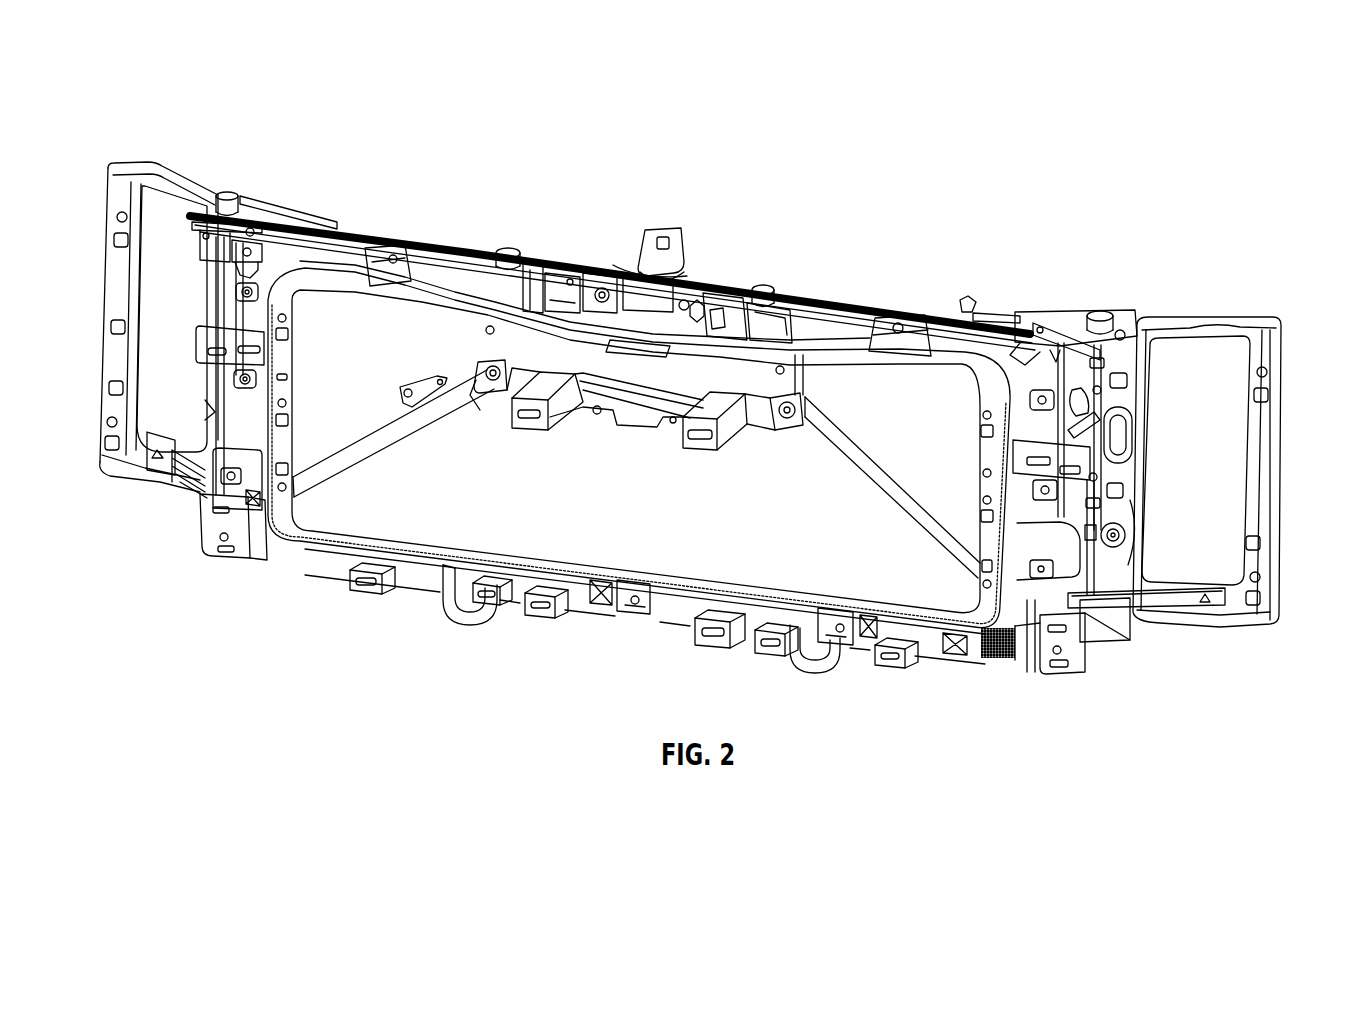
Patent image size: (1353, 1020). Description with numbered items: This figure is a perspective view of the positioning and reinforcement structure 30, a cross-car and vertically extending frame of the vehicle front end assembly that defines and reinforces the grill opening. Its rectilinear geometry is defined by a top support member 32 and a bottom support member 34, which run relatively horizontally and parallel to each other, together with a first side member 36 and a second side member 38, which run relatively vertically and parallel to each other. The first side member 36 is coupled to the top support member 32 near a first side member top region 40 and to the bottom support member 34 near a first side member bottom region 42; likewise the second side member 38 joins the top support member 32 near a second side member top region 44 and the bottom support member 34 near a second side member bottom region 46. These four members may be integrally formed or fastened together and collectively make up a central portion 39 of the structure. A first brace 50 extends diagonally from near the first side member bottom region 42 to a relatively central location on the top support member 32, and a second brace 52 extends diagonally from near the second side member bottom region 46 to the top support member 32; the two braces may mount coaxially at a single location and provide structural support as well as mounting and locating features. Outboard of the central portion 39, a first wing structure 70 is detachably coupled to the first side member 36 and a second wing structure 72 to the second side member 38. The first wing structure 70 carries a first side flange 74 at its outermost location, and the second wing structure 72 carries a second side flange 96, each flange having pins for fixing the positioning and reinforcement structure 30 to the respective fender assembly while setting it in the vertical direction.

The positioning and reinforcement structure 30 is at (1108, 170).
The top support member 32 is at (447, 245).
The bottom support member 34 is at (660, 613).
The first side member 36 is at (219, 386).
The second side member 38 is at (1128, 538).
The central portion 39 is at (848, 300).
The first side member top region 40 is at (259, 198).
The first side member bottom region 42 is at (207, 525).
The second side member top region 44 is at (1036, 314).
The second side member bottom region 46 is at (1093, 650).
The first brace 50 is at (383, 431).
The second brace 52 is at (881, 461).
The first wing structure 70 is at (161, 157).
The second wing structure 72 is at (1203, 304).
The first side flange 74 is at (123, 273).
The second side flange 96 is at (1272, 473).